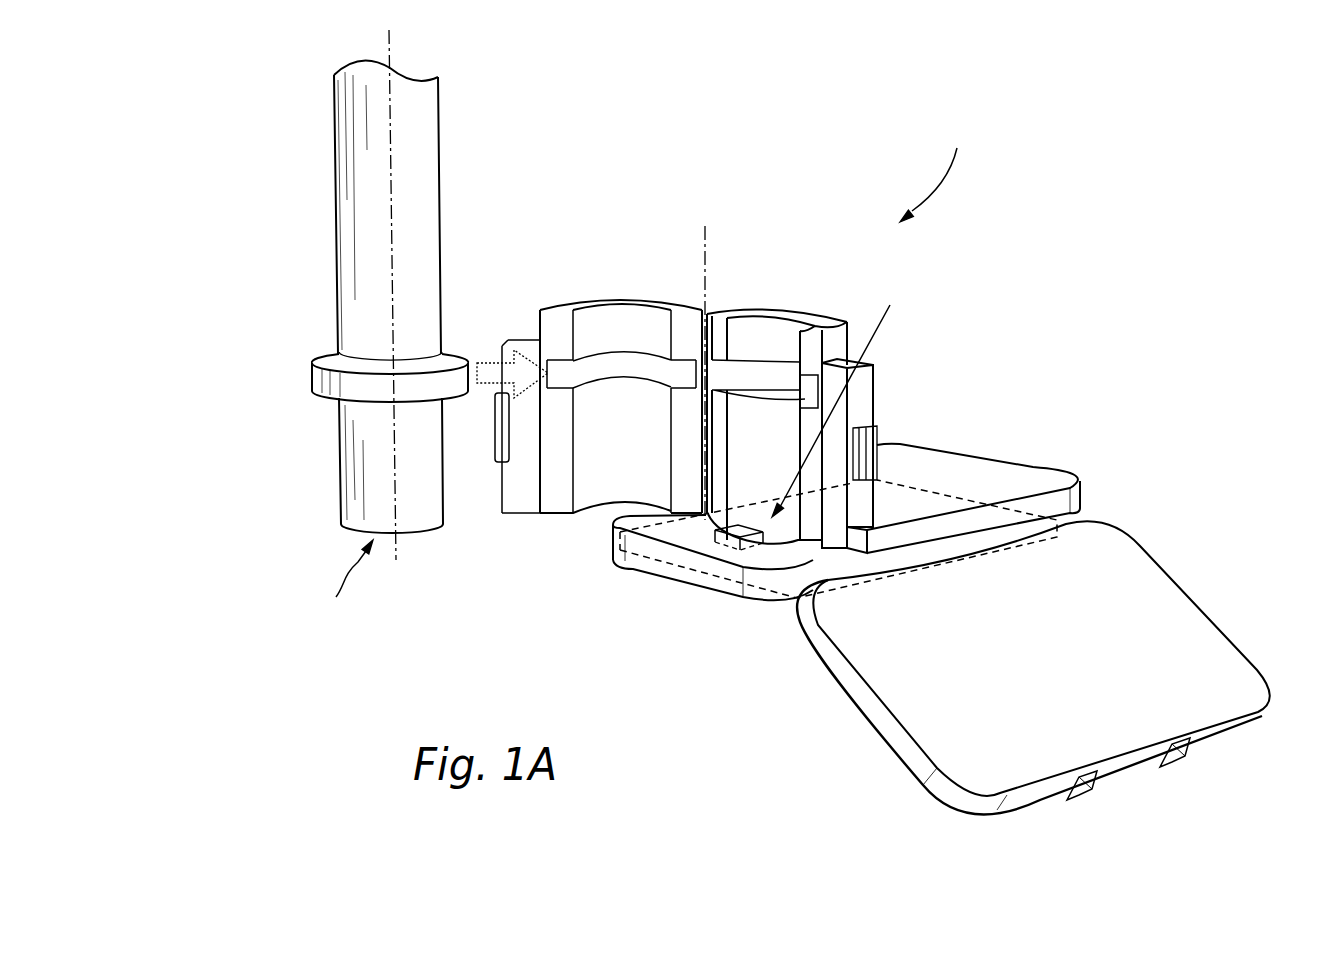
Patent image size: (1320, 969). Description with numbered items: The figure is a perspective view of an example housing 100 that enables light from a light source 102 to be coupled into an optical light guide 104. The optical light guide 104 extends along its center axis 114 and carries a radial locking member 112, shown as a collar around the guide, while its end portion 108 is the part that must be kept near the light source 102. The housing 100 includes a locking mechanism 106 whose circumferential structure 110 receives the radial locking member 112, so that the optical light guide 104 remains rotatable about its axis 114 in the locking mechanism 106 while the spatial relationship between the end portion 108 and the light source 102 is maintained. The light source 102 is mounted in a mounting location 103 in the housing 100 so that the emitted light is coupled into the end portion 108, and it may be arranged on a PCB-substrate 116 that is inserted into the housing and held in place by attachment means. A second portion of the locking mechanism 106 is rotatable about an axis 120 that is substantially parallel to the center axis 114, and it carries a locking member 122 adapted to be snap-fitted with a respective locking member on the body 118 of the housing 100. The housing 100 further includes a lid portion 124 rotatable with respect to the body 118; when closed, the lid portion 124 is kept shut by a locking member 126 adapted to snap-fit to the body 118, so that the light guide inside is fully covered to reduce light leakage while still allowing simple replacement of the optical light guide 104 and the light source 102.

The housing 100 is at (943, 169).
The light source 102 is at (730, 549).
The mounting location 103 is at (842, 398).
The optical light guide 104 is at (360, 130).
The locking mechanism 106 is at (567, 307).
The end portion 108 is at (344, 587).
The circumferential structure 110 is at (733, 378).
The radial locking member 112 is at (322, 384).
The axis 114 is at (392, 38).
The PCB-substrate 116 is at (777, 582).
The body 118 is at (935, 445).
The axis 120 is at (707, 253).
The locking member 122 is at (501, 447).
The lid portion 124 is at (1187, 640).
The locking member 126 is at (1180, 765).